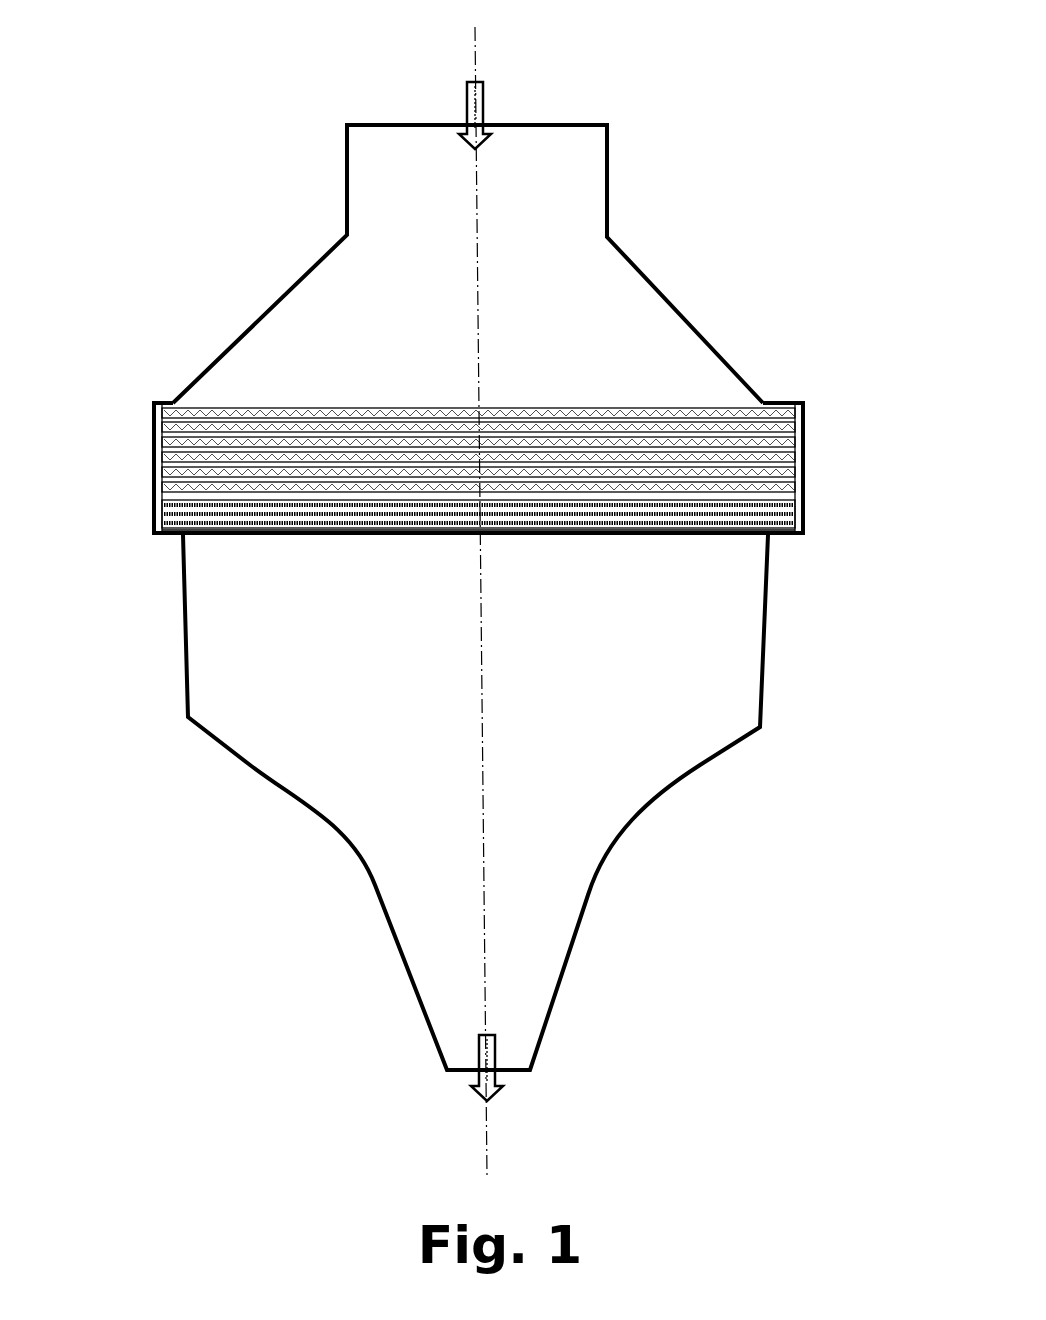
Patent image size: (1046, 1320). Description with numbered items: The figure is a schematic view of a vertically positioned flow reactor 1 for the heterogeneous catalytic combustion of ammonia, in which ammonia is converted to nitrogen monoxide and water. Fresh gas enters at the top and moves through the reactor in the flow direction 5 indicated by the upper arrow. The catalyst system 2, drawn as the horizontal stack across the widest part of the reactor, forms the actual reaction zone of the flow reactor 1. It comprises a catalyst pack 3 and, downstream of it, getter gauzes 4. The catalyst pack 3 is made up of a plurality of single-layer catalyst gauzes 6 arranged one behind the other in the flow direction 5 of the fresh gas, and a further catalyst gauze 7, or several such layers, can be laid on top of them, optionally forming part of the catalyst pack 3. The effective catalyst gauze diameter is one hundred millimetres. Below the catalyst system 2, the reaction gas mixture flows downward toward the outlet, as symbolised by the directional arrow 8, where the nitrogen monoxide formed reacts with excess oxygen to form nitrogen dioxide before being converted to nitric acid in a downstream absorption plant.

The flow reactor 1 is at (704, 302).
The catalyst system 2 is at (820, 432).
The catalyst pack 3 is at (426, 359).
The getter gauzes 4 is at (168, 516).
The flow direction of the fresh gas 5 is at (485, 110).
The single-layer catalyst gauzes 6 is at (230, 488).
The further catalyst gauze 7 is at (218, 412).
The directional arrow showing the flow direction of the reaction gas mixture 8 is at (500, 1088).